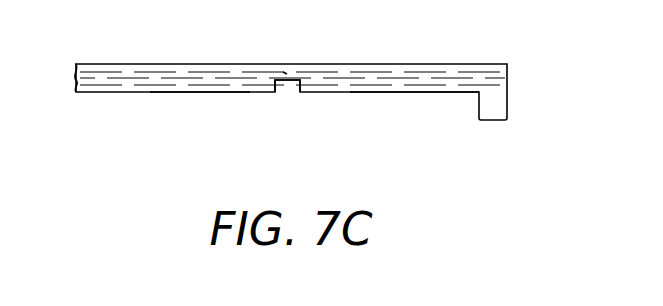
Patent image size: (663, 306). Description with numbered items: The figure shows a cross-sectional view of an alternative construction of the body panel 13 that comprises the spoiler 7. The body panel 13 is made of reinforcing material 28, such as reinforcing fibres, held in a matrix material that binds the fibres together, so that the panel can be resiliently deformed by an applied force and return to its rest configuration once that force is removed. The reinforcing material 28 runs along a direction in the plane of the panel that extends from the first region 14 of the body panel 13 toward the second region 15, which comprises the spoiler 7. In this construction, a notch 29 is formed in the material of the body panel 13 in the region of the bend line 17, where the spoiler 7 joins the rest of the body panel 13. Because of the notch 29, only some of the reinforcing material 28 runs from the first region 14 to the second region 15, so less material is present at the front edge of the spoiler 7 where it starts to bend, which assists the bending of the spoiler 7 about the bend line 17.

The spoiler 7 is at (438, 72).
The body panel 13 is at (97, 98).
The first region 14 is at (173, 119).
The second region 15 is at (417, 119).
The bend line 17 is at (285, 68).
The reinforcing material 28 is at (233, 88).
The notch 29 is at (288, 86).